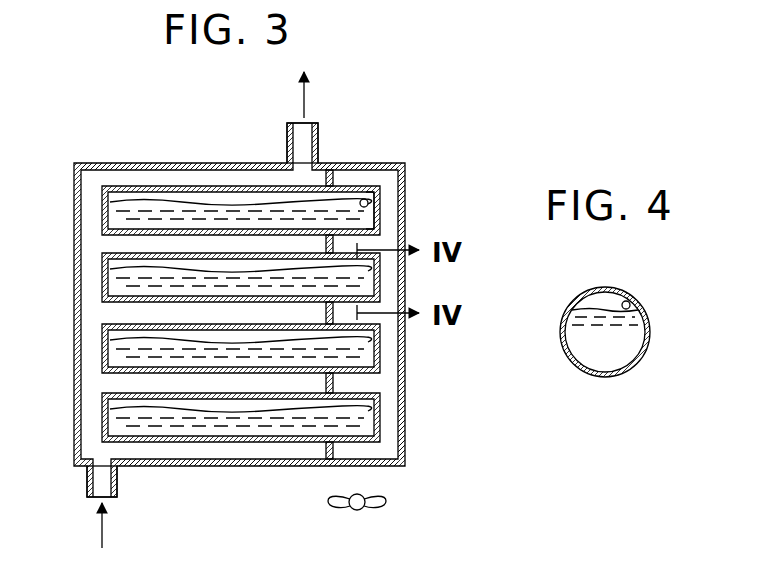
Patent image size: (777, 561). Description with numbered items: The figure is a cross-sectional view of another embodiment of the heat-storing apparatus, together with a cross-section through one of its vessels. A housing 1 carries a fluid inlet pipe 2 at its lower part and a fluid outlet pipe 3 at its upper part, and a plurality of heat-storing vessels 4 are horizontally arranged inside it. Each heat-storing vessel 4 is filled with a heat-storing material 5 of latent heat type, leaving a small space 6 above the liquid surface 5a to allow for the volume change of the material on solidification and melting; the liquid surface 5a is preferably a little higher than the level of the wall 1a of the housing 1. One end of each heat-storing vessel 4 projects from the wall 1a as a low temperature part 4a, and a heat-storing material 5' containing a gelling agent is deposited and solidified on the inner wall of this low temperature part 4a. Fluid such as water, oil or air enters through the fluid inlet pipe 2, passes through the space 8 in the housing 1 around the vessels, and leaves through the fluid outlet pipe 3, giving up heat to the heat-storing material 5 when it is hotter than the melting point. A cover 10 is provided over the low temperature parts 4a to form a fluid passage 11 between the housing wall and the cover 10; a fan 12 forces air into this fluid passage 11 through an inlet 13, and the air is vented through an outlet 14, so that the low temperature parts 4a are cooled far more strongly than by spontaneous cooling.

In FIG. 3, the housing 1 is at (77, 279).
In FIG. 3, the wall of housing 1a is at (333, 385).
In FIG. 3, the fluid inlet pipe 2 is at (86, 476).
In FIG. 3, the fluid outlet pipe 3 is at (288, 144).
In FIG. 3, the heat-storing vessel 4 is at (170, 186).
In FIG. 4, the heat-storing vessel 4 is at (636, 368).
In FIG. 3, the low temperature part 4a is at (382, 208).
In FIG. 3, the heat-storing material 5 is at (240, 171).
In FIG. 4, the heat-storing material 5 is at (605, 365).
In FIG. 3, the liquid surface 5a is at (124, 201).
In FIG. 4, the liquid surface 5a is at (596, 309).
In FIG. 3, the heat-storing material containing a gelling agent 5' is at (405, 219).
In FIG. 4, the heat-storing material containing a gelling agent 5' is at (644, 287).
In FIG. 3, the vapor space 6 is at (275, 203).
In FIG. 4, the vapor space 6 is at (610, 300).
In FIG. 3, the space 8 is at (100, 378).
In FIG. 3, the cover 10 is at (400, 163).
In FIG. 3, the fluid passage 11 is at (390, 285).
In FIG. 3, the fan 12 is at (372, 511).
In FIG. 3, the inlet 13 is at (365, 468).
In FIG. 3, the outlet 14 is at (357, 165).